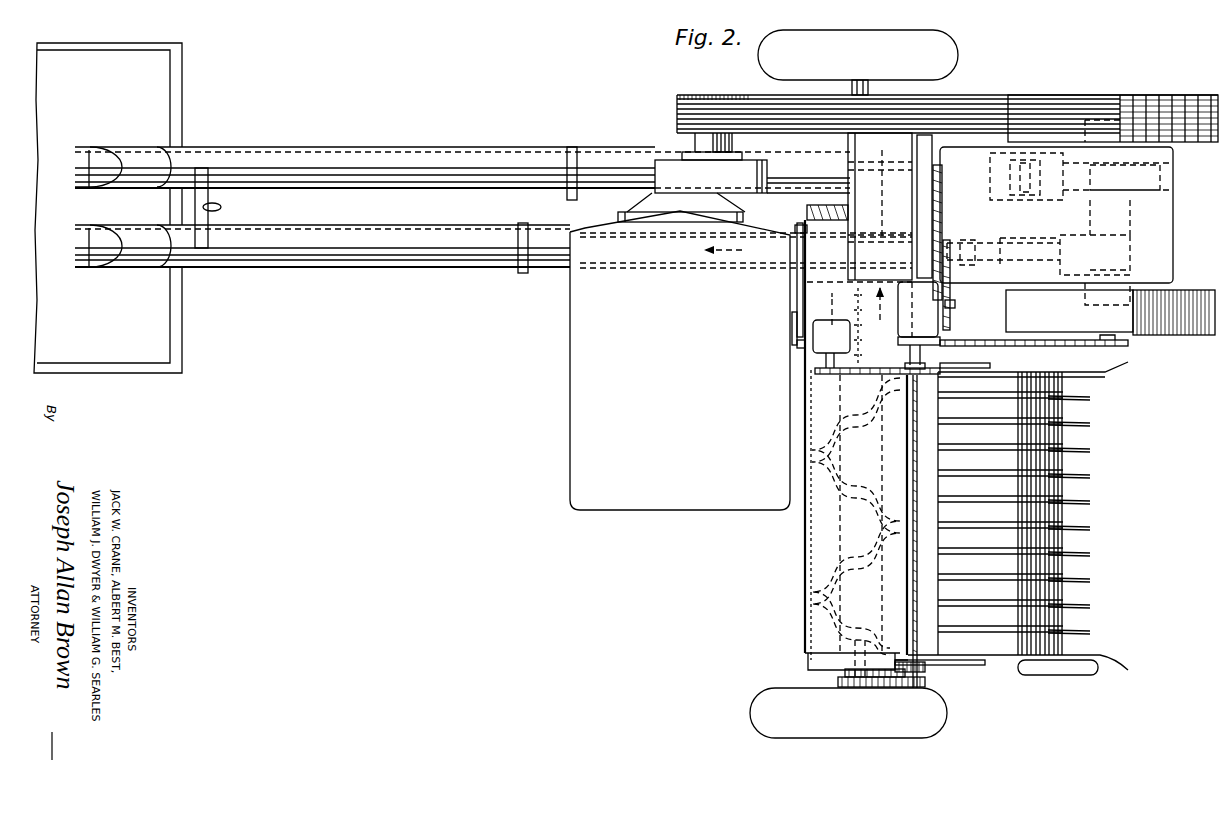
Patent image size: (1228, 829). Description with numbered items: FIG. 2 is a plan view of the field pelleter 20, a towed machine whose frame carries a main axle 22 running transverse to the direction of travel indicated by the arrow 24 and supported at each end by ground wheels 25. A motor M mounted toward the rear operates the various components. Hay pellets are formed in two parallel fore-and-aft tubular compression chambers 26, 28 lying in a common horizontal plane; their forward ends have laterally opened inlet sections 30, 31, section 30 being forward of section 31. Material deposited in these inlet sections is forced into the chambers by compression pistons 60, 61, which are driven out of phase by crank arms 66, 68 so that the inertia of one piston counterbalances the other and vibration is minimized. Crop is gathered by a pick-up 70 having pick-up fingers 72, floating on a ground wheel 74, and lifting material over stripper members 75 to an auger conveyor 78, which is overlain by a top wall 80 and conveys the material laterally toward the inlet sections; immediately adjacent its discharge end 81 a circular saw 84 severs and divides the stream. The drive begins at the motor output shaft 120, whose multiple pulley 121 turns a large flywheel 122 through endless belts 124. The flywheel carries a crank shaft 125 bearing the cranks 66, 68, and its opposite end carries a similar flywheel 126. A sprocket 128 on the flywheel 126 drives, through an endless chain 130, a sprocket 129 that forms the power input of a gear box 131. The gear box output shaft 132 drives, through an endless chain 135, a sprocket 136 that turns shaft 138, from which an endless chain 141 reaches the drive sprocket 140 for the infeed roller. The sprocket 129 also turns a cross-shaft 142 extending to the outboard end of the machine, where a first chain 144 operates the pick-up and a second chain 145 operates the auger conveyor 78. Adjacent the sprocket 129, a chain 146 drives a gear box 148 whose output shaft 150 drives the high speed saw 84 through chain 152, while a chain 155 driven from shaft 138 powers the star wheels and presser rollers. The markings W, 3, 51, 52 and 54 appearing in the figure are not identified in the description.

The wall W is at (182, 337).
The motor M is at (576, 408).
The section line 3- 3 is at (832, 144).
The field pelleter 20 is at (686, 598).
The main axle 22 is at (855, 85).
The arrow indicating direction of travel 24 is at (1185, 505).
The ground wheels 25 is at (949, 47).
The compression chamber 26 is at (622, 157).
The compression chamber 28 is at (543, 237).
The inlet section 30 is at (872, 176).
The inlet section 31 is at (818, 252).
The outer tube 51 is at (420, 230).
The clamp 52 is at (222, 207).
The inner tubes 54 is at (80, 225).
The compression piston 60 is at (965, 173).
The compression piston 61 is at (893, 244).
The crank arm 66 is at (1152, 196).
The crank arm 68 is at (1115, 243).
The pick-up 70 is at (1082, 440).
The pick-up fingers 72 is at (1090, 505).
The ground wheel 74 is at (1080, 673).
The stripper members 75 is at (1000, 645).
The auger conveyor 78 is at (846, 528).
The top wall 80 is at (815, 593).
The discharge end 81 is at (868, 408).
The circular saw 84 is at (859, 296).
The output shaft 120 is at (693, 143).
The multiple pulley 121 is at (695, 87).
The flywheel 122 is at (1083, 95).
The endless belts 124 is at (926, 112).
The crank shaft 125 is at (1148, 216).
The flywheel 126 is at (1198, 292).
The sprocket 128 is at (1118, 346).
The sprocket 129 is at (905, 346).
The endless chain 130 is at (985, 341).
The gear box 131 is at (900, 322).
The output shaft 132 is at (956, 304).
The endless chain 135 is at (951, 286).
The sprocket 136 is at (952, 250).
The shaft 138 is at (914, 270).
The drive sprocket 140 is at (942, 184).
The endless chain 141 is at (942, 206).
The cross-shaft 142 is at (912, 475).
The first chain 144 is at (900, 690).
The second chain 145 is at (926, 668).
The chain 146 is at (858, 374).
The gear box 148 is at (846, 350).
The output shaft 150 is at (797, 346).
The chain 152 is at (792, 330).
The chain 155 is at (797, 295).